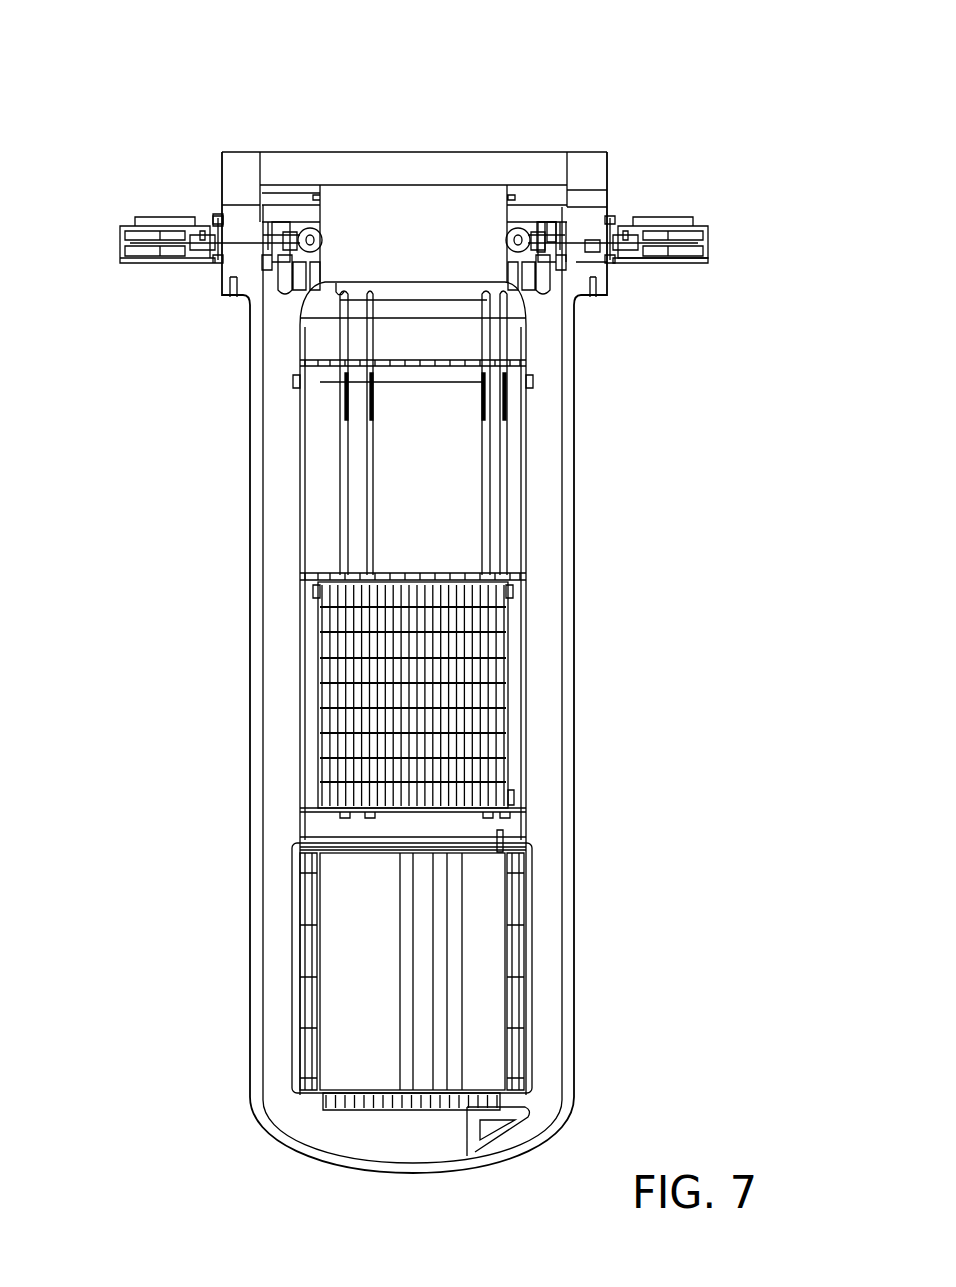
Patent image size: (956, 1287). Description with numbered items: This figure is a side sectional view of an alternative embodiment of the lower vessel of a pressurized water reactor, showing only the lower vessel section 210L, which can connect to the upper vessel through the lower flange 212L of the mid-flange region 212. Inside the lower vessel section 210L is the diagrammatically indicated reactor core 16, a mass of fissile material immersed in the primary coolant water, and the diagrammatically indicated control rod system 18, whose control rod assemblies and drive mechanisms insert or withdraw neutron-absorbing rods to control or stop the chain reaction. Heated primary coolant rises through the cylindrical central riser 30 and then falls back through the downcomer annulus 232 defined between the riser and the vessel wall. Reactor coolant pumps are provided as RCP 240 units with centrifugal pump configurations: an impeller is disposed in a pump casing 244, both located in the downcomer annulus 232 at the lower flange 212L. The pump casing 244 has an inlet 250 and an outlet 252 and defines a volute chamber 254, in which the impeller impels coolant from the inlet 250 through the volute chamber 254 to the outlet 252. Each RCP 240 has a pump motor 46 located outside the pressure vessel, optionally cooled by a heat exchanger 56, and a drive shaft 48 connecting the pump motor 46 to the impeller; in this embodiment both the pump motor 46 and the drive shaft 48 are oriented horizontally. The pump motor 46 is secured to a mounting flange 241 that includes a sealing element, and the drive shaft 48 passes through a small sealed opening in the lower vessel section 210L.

The reactor core 16 is at (380, 983).
The control rod system 18 is at (228, 313).
The central riser 30 is at (533, 528).
The pump motor 46 is at (705, 253).
The drive shaft 48 is at (592, 247).
The heat exchanger 56 is at (688, 214).
The lower vessel section 210L is at (578, 693).
The mid-flange region 212 is at (133, 287).
The lower flange 212L is at (607, 167).
The downcomer annulus 232 is at (548, 618).
The RCP 240 is at (672, 322).
The mounting flange 241 is at (215, 218).
The pump casing 244 is at (610, 221).
The inlet 250 is at (540, 228).
The outlet 252 is at (545, 293).
The volute chamber 254 is at (552, 227).